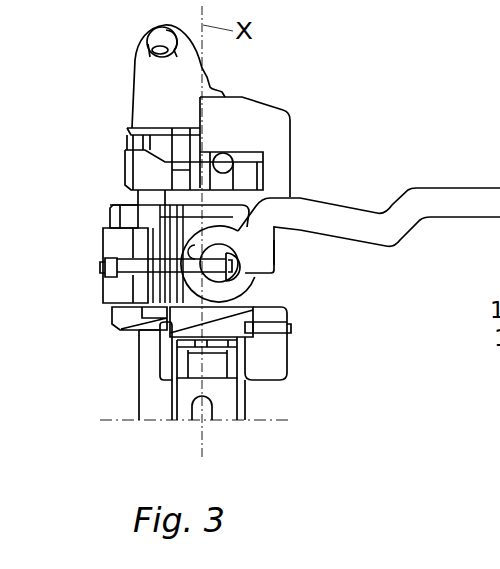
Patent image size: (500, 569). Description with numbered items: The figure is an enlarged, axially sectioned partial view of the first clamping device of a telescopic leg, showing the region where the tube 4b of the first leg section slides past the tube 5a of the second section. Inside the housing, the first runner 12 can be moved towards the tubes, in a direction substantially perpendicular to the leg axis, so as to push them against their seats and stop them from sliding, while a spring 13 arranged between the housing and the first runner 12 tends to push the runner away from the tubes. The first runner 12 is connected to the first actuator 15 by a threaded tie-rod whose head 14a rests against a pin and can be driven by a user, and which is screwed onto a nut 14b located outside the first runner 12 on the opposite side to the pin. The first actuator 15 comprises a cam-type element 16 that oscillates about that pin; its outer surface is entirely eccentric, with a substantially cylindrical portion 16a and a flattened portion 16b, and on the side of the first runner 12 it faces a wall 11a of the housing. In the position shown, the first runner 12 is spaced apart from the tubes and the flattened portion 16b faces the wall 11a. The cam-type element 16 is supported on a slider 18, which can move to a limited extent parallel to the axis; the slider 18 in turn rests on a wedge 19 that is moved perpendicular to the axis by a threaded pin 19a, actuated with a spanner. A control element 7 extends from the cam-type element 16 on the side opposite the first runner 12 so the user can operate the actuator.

The control element 7 is at (405, 189).
The head 14a is at (223, 300).
The first actuator 15 is at (264, 277).
The substantially cylindrical portion 16a is at (237, 332).
The threaded pin 19a is at (291, 328).
The wedge 19 is at (288, 365).
The cam-type element 16 is at (236, 385).
The tube 5a is at (216, 392).
The tube 4b is at (150, 385).
The slider 18 is at (160, 352).
The flattened portion 16b is at (165, 320).
The spring 13 is at (122, 308).
The nut 14b is at (103, 270).
The first runner 12 is at (112, 242).
The wall 11a is at (138, 204).